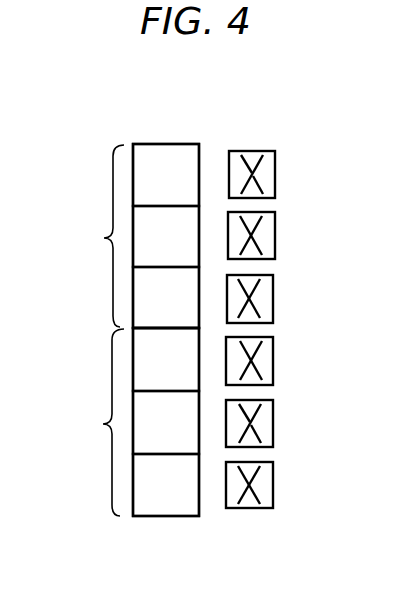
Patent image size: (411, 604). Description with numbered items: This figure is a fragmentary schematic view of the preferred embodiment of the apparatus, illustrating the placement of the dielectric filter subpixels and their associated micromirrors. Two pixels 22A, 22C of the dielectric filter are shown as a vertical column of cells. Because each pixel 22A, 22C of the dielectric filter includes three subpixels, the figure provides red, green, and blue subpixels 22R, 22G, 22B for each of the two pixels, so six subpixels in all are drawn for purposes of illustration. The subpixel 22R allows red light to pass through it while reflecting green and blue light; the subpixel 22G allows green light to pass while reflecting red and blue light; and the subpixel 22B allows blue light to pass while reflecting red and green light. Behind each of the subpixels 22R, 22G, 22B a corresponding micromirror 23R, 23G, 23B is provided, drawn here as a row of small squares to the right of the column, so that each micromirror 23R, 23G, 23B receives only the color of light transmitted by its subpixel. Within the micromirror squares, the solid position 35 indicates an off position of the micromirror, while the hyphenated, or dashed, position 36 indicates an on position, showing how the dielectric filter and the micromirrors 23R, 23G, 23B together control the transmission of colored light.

The pixel 22A is at (126, 236).
The pixel 22C is at (124, 422).
The red subpixel 22R is at (163, 144).
The green subpixel 22G is at (200, 218).
The blue subpixel 22B is at (200, 277).
The micromirror 23R is at (276, 163).
The micromirror 23G is at (275, 235).
The micromirror 23B is at (275, 300).
The off position 35 is at (262, 151).
The on position 36 is at (264, 190).